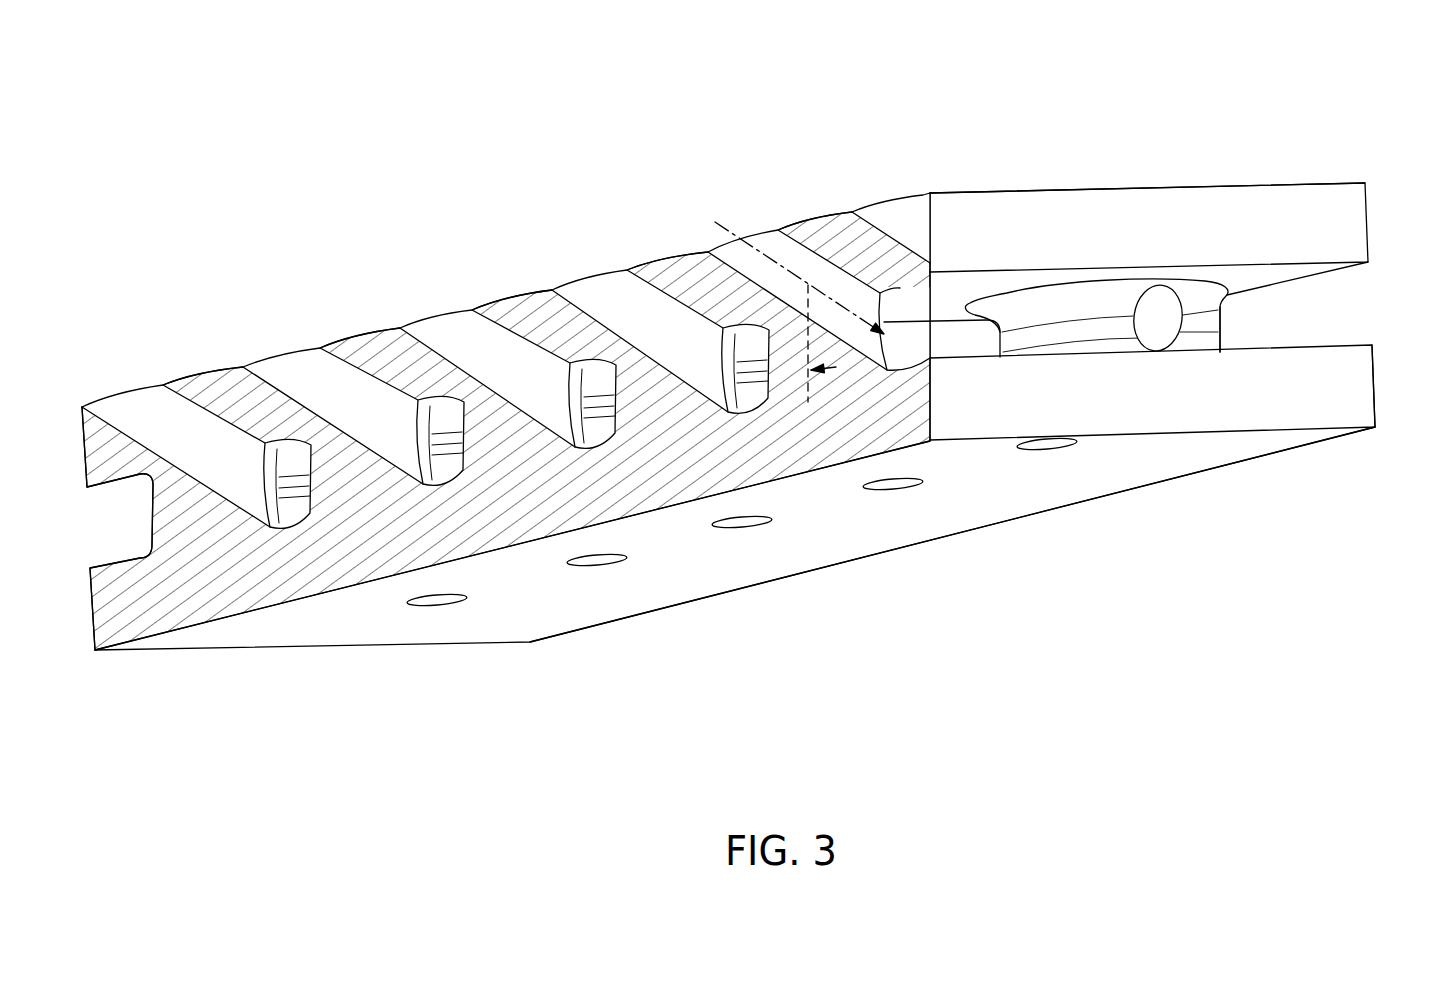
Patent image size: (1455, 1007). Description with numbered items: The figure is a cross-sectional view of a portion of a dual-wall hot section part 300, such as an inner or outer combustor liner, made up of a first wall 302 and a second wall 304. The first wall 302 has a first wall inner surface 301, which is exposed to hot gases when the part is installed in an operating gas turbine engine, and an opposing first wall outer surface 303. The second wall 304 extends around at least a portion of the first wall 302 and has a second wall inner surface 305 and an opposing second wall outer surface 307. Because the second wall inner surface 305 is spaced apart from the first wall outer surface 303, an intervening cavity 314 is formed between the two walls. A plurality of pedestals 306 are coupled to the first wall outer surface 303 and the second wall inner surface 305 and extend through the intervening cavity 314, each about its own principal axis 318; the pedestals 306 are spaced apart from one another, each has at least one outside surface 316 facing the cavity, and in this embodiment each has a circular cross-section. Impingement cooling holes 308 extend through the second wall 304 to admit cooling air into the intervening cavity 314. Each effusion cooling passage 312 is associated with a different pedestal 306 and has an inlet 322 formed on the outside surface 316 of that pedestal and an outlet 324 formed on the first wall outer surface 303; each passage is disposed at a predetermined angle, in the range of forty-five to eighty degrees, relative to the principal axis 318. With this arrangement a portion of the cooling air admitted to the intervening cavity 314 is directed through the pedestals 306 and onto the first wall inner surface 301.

The dual-wall hot section part 300 is at (255, 118).
The first wall inner surface 301 is at (1149, 211).
The first wall 302 is at (1333, 197).
The first wall outer surface 303 is at (1288, 272).
The second wall 304 is at (1362, 390).
The second wall inner surface 305 is at (762, 417).
The pedestal 306 is at (294, 511).
The second wall outer surface 307 is at (1296, 437).
The impingement cooling hole 308 is at (437, 600).
The effusion cooling passage 312 is at (197, 417).
The intervening cavity 314 is at (1342, 309).
The outside surface 316 is at (1207, 325).
The principal axis 318 is at (814, 383).
The inlet 322 is at (1162, 305).
The outlet 324 is at (753, 238).